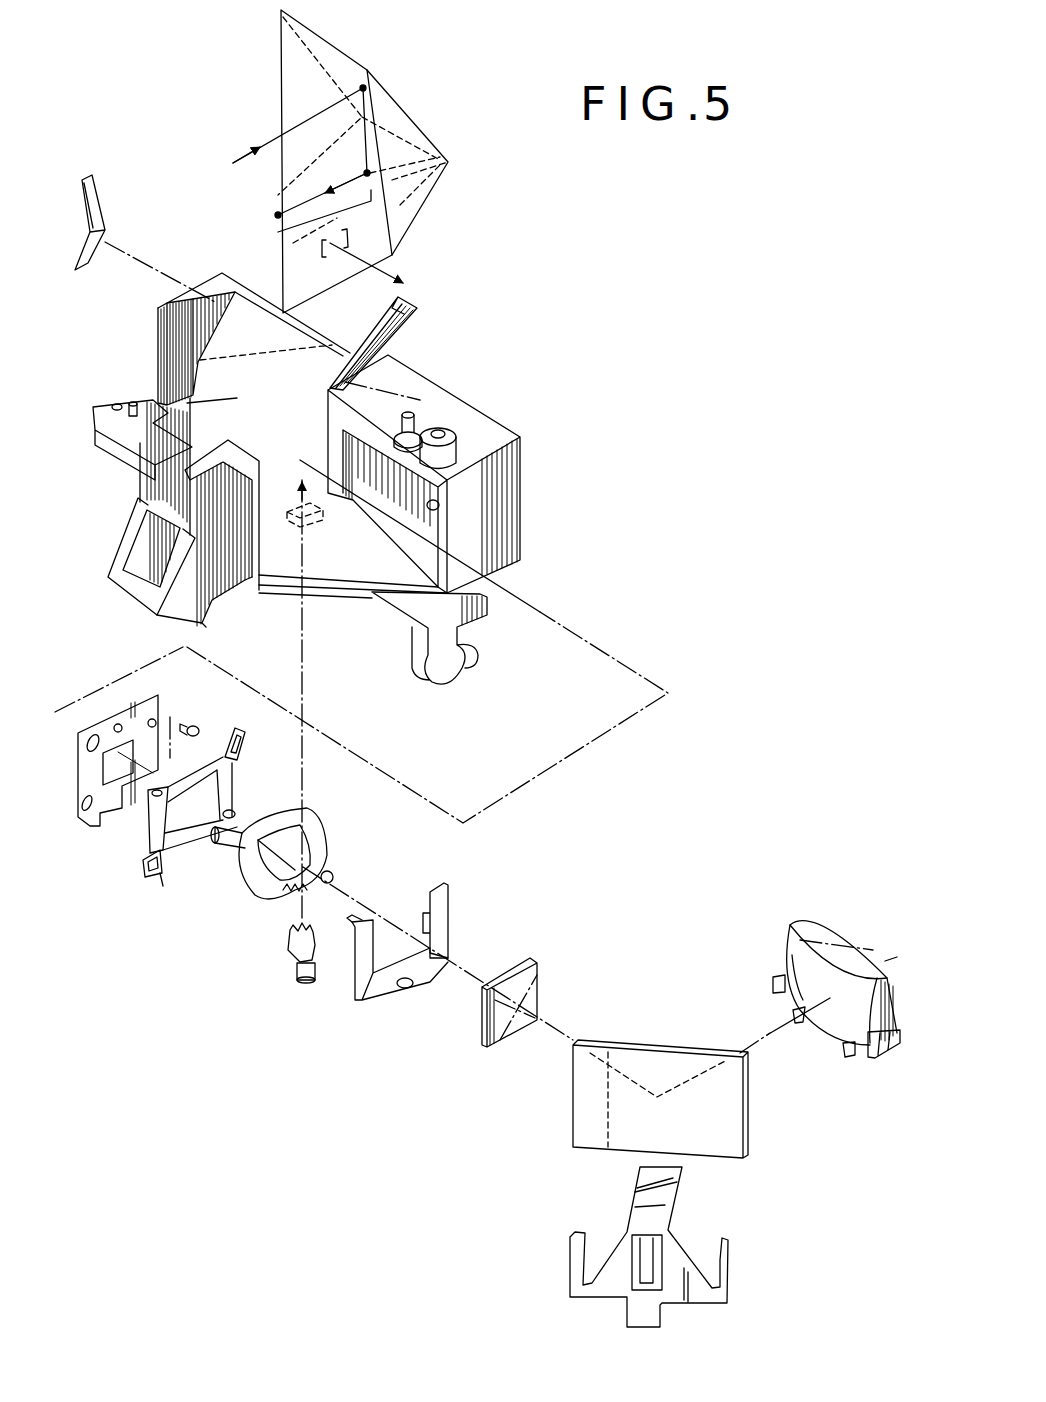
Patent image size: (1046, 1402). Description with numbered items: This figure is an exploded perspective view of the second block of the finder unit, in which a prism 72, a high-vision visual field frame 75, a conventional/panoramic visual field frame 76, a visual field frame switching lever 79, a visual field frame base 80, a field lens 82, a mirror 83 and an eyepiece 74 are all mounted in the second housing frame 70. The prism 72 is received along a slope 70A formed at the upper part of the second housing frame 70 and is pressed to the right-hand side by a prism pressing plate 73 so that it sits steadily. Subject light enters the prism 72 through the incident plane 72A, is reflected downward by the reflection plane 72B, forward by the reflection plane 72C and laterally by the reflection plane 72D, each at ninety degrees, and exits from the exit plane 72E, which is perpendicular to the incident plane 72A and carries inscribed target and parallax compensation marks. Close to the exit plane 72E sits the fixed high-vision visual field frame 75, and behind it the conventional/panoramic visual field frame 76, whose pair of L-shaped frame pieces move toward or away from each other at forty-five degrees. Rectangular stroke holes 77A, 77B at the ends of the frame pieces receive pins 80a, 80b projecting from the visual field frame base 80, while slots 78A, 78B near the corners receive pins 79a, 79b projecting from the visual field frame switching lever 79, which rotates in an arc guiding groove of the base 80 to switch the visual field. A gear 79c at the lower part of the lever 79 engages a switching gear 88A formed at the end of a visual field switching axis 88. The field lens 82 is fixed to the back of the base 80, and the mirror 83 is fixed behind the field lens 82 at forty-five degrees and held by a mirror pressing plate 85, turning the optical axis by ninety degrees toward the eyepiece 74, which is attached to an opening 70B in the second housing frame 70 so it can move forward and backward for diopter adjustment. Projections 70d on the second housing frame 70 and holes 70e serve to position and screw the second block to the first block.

The second housing frame 70 is at (500, 393).
The slope 70A is at (237, 397).
The opening 70B is at (438, 512).
The projections 70d is at (128, 400).
The holes 70e is at (104, 405).
The prism 72 is at (458, 181).
The incident plane 72A is at (292, 77).
The reflection plane 72B is at (363, 86).
The reflection plane 72C is at (418, 203).
The reflection plane 72D is at (277, 212).
The exit plane 72E is at (292, 267).
The prism pressing plate 73 is at (85, 179).
The eyepiece 74 is at (803, 923).
The high-vision (H) visual field frame 75 is at (78, 793).
The conventional/panoramic (CP) visual field frame 76 is at (167, 890).
The rectangular stroke hole 77A is at (150, 866).
The rectangular stroke hole 77B is at (233, 740).
The slot 78A is at (150, 800).
The slot 78B is at (237, 812).
The visual field frame switching lever 79 is at (263, 898).
The pin 79a is at (166, 866).
The pin 79b is at (328, 868).
The gear 79c is at (332, 888).
The visual field frame base 80 is at (367, 990).
The pin 80a is at (358, 986).
The pin 80b is at (432, 883).
The field lens 82 is at (500, 1042).
The mirror 83 is at (575, 1138).
The mirror pressing plate 85 is at (673, 1250).
The visual field switching axis 88 is at (295, 987).
The switching gear 88A is at (290, 930).